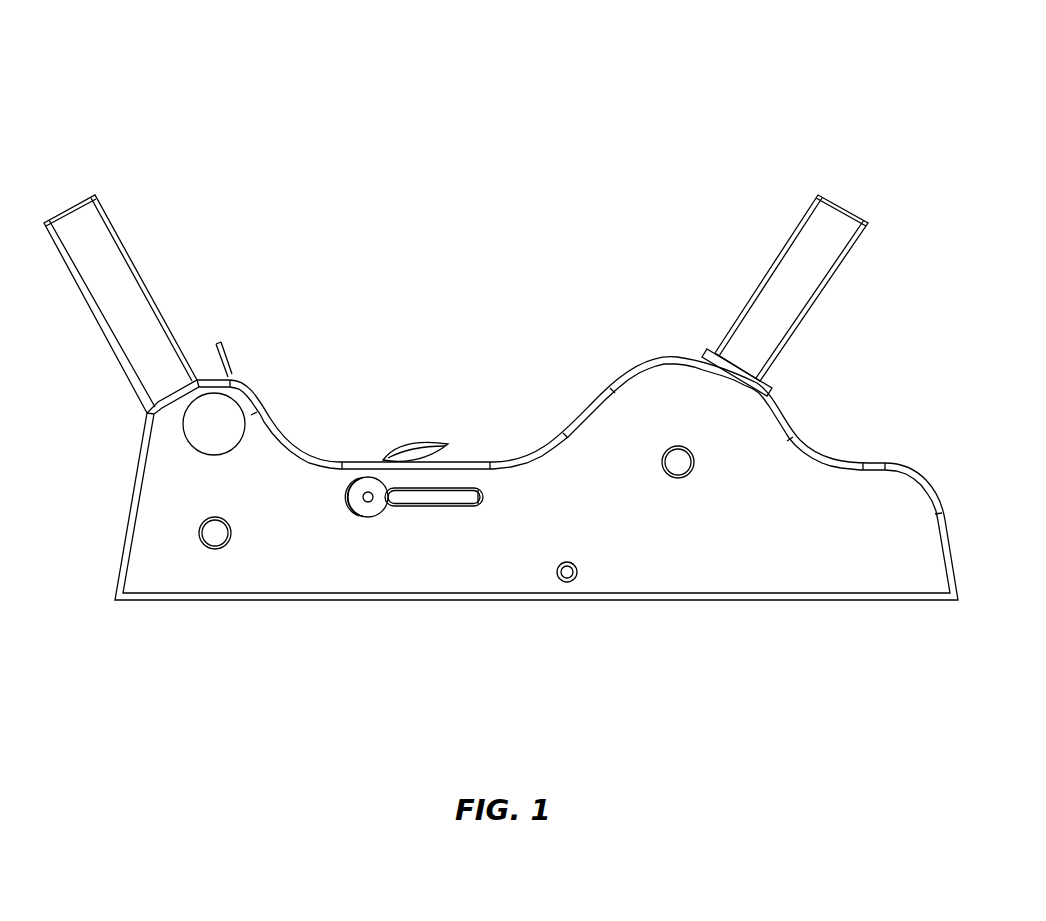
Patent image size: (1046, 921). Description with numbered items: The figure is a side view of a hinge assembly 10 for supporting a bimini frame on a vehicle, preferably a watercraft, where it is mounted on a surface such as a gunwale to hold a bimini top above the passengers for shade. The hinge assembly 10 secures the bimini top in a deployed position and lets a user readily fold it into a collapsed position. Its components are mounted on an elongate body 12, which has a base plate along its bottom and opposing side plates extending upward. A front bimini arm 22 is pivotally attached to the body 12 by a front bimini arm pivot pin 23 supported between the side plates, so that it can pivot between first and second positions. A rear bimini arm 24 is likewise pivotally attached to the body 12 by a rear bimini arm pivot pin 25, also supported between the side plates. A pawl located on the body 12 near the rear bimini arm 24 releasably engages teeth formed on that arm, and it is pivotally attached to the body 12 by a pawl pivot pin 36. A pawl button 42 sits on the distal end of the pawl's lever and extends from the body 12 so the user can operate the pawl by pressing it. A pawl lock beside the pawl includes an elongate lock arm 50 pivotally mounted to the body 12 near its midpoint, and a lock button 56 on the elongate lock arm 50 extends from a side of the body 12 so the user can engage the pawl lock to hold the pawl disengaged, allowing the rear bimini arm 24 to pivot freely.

The hinge assembly 10 is at (515, 190).
The body 12 is at (875, 462).
The front bimini arm 22 is at (128, 247).
The rear bimini arm 24 is at (818, 308).
The front bimini arm pivot pin 23 is at (218, 533).
The rear bimini arm pivot pin 25 is at (682, 465).
The pawl pivot pin 36 is at (575, 569).
The pawl button 42 is at (423, 442).
The elongate lock arm 50 is at (433, 500).
The lock button 56 is at (368, 478).